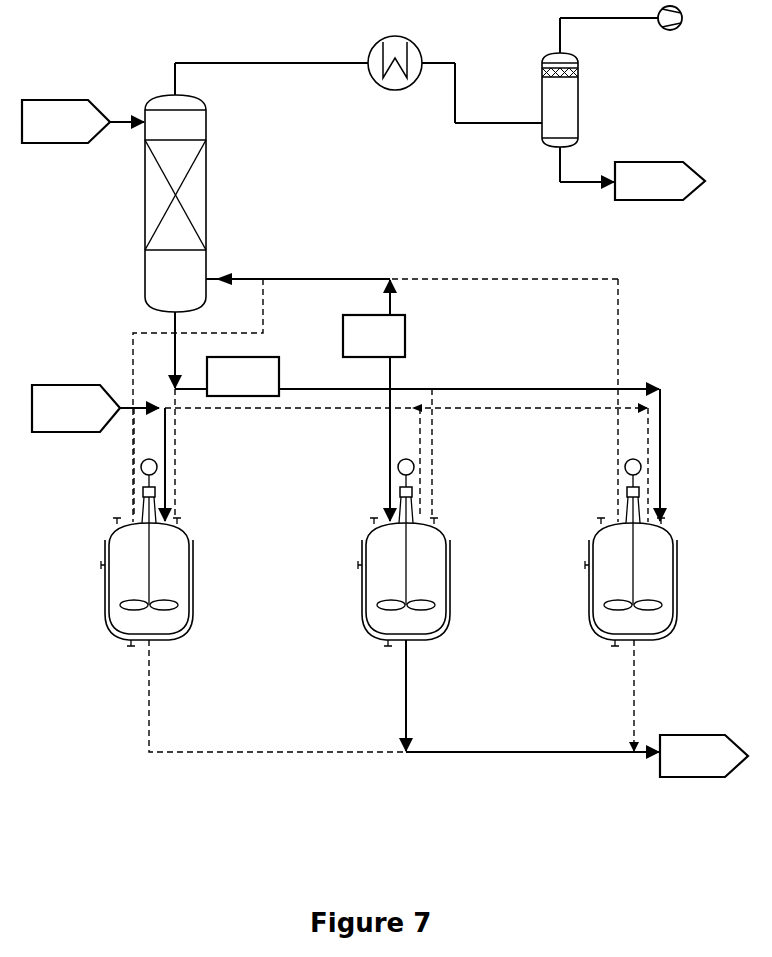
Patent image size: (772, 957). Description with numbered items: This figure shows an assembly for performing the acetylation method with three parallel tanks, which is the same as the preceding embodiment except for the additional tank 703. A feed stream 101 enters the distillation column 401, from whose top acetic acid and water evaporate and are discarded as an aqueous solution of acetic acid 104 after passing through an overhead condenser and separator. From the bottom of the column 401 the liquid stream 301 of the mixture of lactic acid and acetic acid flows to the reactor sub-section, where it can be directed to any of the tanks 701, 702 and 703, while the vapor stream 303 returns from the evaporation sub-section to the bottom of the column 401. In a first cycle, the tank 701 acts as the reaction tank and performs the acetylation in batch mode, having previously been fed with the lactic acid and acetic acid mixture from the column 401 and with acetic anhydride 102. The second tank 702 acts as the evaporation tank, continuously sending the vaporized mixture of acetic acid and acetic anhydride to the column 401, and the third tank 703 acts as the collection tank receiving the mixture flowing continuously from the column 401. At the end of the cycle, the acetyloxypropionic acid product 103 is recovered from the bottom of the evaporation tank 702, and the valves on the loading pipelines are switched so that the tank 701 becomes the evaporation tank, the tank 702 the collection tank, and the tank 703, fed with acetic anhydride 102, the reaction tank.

The lactic acid feed 101 is at (83, 121).
The acetic anhydride 102 is at (95, 408).
The (S)-2-acetyloxypropionic acid 103 is at (577, 756).
The aqueous solution of acetic acid 104 is at (632, 181).
The liquid stream 301 is at (417, 354).
The vapor stream 303 is at (305, 331).
The column 401 is at (207, 211).
The tank 701 is at (191, 572).
The tank 702 is at (448, 548).
The tank 703 is at (676, 550).